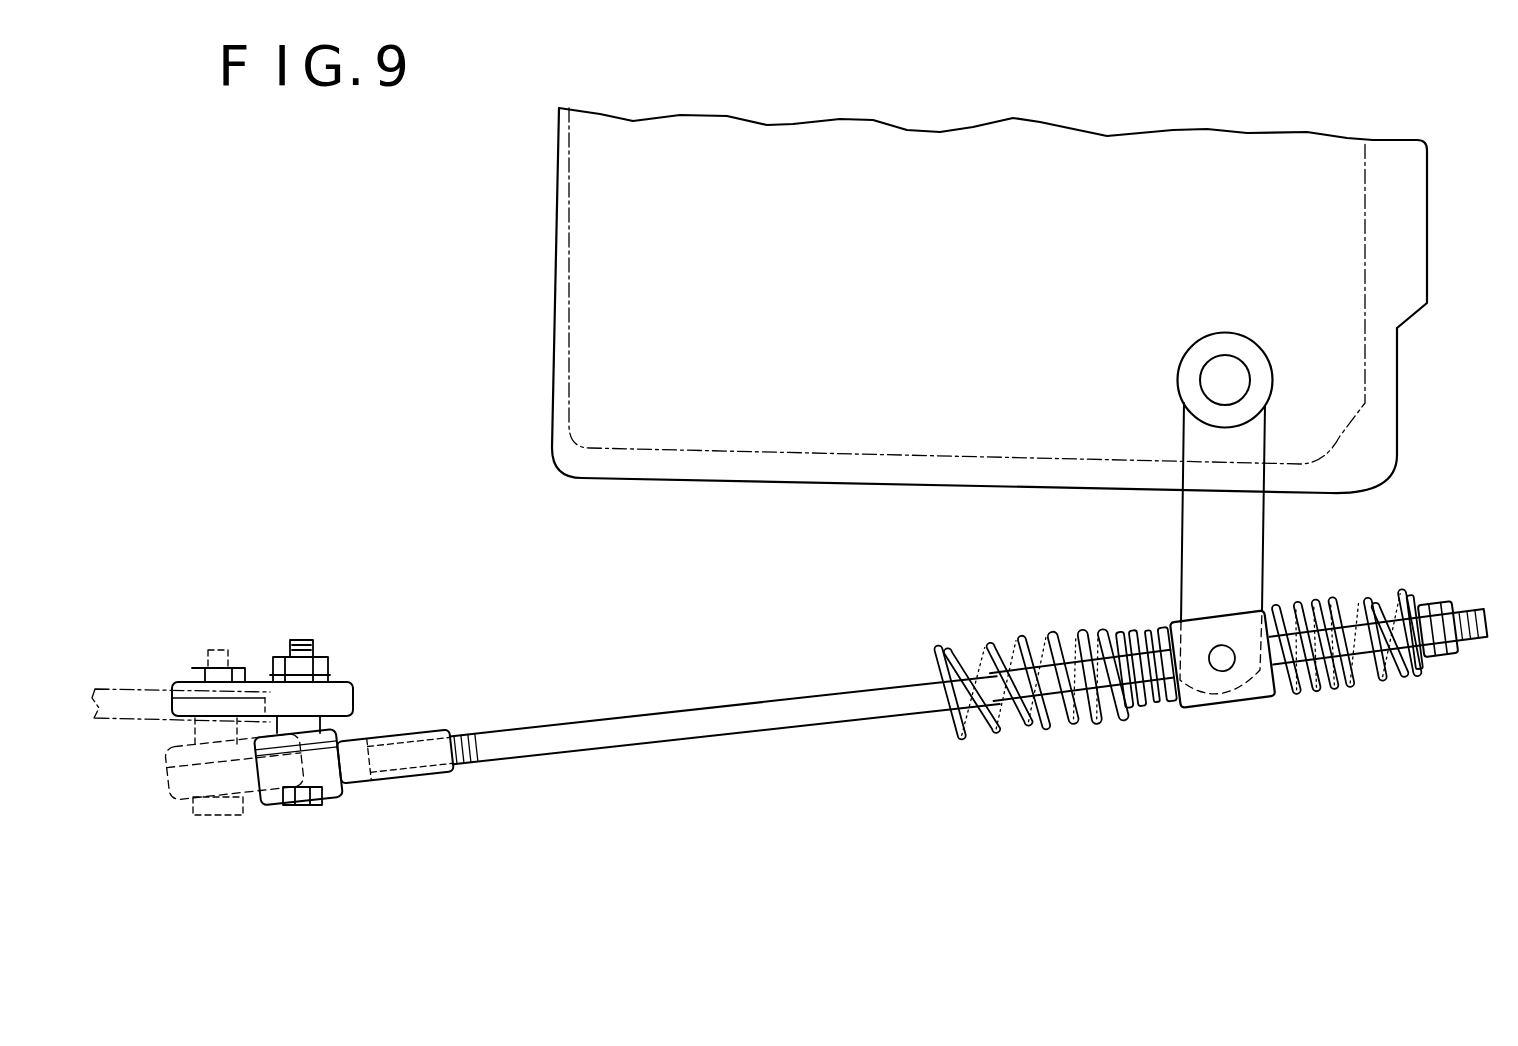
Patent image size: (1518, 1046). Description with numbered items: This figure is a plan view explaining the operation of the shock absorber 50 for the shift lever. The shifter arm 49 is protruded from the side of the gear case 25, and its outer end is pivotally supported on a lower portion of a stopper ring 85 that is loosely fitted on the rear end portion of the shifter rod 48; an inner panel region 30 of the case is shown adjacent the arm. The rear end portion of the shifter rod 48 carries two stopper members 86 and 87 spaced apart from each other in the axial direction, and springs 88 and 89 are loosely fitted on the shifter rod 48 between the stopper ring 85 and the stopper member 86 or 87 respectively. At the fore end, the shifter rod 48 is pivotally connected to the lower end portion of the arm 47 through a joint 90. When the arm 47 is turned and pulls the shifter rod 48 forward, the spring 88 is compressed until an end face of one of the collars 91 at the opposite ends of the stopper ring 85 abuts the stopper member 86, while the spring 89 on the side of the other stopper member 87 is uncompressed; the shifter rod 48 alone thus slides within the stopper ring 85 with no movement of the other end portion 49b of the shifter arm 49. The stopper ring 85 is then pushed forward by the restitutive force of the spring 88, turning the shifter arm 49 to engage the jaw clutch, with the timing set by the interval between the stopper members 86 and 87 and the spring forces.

The gear case 25 is at (1427, 250).
The inner panel 30 is at (1368, 188).
The arm 47 is at (352, 690).
The shifter rod 48 is at (610, 720).
The shifter arm 49 is at (1272, 374).
The other end portion of the shifter arm 49b is at (1258, 545).
The shock absorber 50 is at (1414, 613).
The stopper ring 85 is at (1196, 713).
The stopper member 86 is at (1417, 673).
The stopper member 87 is at (1034, 722).
The spring 88 is at (1370, 680).
The spring 89 is at (1088, 715).
The joint 90 is at (312, 803).
The collars 91 is at (1127, 712).